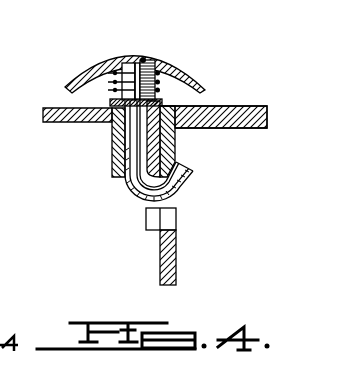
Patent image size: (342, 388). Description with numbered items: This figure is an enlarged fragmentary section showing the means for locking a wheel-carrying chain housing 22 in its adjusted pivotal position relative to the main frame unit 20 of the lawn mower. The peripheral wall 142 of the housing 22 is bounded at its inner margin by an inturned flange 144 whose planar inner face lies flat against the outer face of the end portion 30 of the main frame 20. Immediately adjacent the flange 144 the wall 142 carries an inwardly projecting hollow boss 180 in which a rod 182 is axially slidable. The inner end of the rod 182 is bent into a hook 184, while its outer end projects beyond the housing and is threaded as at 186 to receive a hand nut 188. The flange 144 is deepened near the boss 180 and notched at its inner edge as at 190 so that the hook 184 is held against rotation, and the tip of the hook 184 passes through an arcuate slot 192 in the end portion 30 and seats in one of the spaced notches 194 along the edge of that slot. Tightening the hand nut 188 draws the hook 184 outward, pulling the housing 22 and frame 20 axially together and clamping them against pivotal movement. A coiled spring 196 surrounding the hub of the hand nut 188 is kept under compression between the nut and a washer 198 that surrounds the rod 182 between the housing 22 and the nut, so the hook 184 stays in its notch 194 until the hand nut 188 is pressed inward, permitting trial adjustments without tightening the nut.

The main frame unit 20 is at (232, 109).
The chain housing 22 is at (43, 110).
The end portion 30 is at (176, 266).
The peripheral wall 142 is at (63, 123).
The inturned flange 144 is at (149, 229).
The hollow boss 180 is at (118, 163).
The rod 182 is at (112, 142).
The hook 184 is at (194, 173).
The threaded portion 186 is at (138, 58).
The hand nut 188 is at (180, 62).
The notch 190 is at (146, 217).
The arcuate slot 192 is at (170, 222).
The notch 194 is at (178, 146).
The coiled spring 196 is at (116, 71).
The washer 198 is at (112, 92).